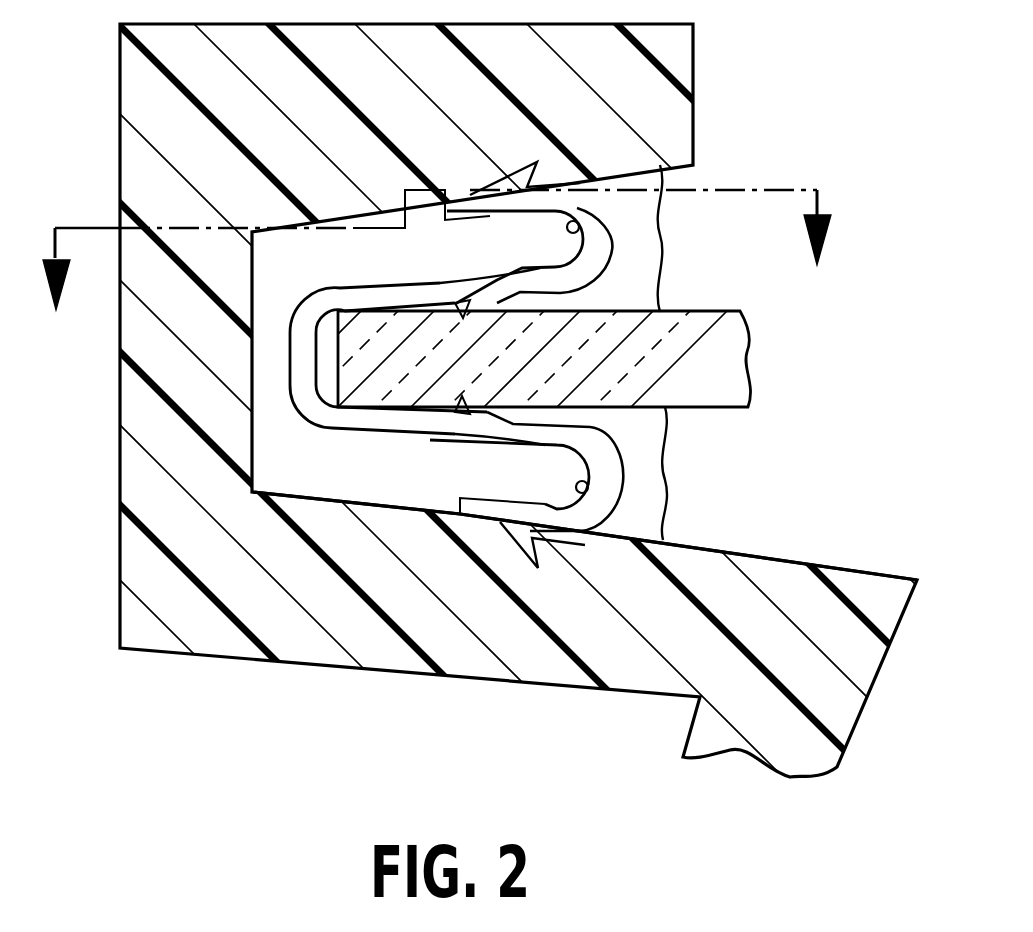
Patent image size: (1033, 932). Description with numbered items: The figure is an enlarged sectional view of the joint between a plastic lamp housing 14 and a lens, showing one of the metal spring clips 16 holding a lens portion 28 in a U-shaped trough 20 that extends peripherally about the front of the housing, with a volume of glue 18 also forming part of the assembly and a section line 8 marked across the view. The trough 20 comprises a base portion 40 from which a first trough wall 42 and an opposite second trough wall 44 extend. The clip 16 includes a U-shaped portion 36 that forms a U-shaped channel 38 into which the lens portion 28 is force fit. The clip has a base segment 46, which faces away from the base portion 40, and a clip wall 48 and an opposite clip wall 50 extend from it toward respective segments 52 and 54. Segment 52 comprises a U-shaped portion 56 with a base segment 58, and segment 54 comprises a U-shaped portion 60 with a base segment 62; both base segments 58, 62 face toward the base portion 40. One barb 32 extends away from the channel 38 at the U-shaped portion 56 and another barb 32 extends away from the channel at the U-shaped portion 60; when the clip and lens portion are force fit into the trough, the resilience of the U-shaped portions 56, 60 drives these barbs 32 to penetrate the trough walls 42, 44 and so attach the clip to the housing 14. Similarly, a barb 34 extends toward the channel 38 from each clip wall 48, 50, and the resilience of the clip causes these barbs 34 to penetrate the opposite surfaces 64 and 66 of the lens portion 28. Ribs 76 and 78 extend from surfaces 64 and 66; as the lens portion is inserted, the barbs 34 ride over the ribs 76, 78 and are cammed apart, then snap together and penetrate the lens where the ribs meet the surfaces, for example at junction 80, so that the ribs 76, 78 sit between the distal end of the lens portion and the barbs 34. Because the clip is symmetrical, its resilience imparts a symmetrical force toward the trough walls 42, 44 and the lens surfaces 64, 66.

The section line 8- 8 is at (437, 270).
The lamp housing 14 is at (668, 716).
The spring clip 16 is at (449, 358).
The glue 18 is at (663, 543).
The trough 20 is at (683, 454).
The lens portion 28 is at (748, 350).
The barb 32 is at (530, 178).
The barb 34 is at (487, 310).
The U-shaped portion 36 is at (278, 252).
The U-shaped channel 38 is at (325, 363).
The base portion 40 is at (257, 438).
The first trough wall 42 is at (357, 226).
The second trough wall 44 is at (322, 497).
The base segment 46 is at (317, 347).
The clip wall 48 is at (653, 285).
The clip wall 50 is at (373, 407).
The segment 52 is at (528, 237).
The segment 54 is at (565, 478).
The U-shaped portion 56 is at (628, 238).
The base segment 58 is at (660, 213).
The U-shaped portion 60 is at (632, 486).
The base segment 62 is at (586, 494).
The surface 64 is at (713, 312).
The surface 66 is at (752, 410).
The rib 76 is at (447, 303).
The rib 78 is at (443, 410).
The junction 80 is at (470, 316).